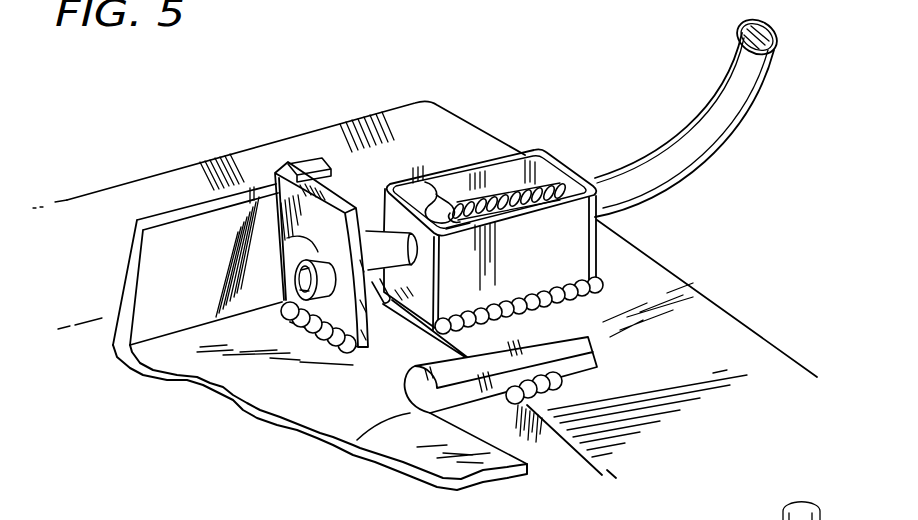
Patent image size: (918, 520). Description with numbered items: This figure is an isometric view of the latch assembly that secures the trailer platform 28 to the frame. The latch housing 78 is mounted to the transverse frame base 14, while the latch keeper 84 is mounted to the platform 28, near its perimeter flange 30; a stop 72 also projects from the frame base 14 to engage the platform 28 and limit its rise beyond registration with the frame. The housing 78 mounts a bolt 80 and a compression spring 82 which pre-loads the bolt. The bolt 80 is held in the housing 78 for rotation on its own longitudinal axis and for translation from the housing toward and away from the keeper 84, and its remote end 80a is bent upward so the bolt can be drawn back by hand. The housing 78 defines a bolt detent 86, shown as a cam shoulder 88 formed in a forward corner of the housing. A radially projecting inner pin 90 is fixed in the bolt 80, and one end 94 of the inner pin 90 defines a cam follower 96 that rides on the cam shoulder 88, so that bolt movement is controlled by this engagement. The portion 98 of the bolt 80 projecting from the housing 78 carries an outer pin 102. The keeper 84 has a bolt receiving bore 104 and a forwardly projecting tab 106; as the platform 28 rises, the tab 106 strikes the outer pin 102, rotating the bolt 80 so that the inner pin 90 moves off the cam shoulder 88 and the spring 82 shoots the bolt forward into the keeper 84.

The frame base 14 is at (738, 337).
The platform 28 is at (292, 404).
The perimeter flange 30 is at (153, 214).
The stop 72 is at (353, 448).
The housing 78 is at (490, 239).
The bolt 80 is at (616, 174).
The remote end of bolt 80a is at (757, 75).
The compression spring 82 is at (524, 180).
The latch keeper 84 is at (327, 320).
The bolt detent 86 is at (410, 183).
The cam shoulder 88 is at (423, 184).
The inner pin 90 is at (450, 213).
The end of inner pin 94 is at (463, 207).
The cam follower 96 is at (463, 232).
The projecting portion of bolt 98 is at (292, 289).
The outer pin 102 is at (366, 220).
The bolt receiving bore 104 is at (287, 238).
The tab 106 is at (308, 161).